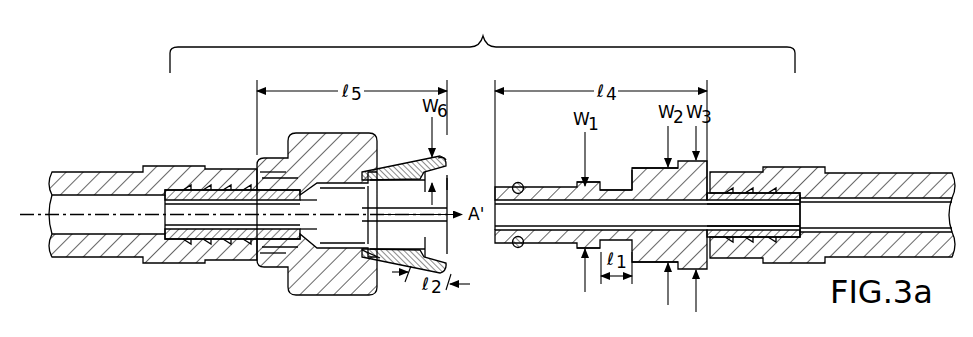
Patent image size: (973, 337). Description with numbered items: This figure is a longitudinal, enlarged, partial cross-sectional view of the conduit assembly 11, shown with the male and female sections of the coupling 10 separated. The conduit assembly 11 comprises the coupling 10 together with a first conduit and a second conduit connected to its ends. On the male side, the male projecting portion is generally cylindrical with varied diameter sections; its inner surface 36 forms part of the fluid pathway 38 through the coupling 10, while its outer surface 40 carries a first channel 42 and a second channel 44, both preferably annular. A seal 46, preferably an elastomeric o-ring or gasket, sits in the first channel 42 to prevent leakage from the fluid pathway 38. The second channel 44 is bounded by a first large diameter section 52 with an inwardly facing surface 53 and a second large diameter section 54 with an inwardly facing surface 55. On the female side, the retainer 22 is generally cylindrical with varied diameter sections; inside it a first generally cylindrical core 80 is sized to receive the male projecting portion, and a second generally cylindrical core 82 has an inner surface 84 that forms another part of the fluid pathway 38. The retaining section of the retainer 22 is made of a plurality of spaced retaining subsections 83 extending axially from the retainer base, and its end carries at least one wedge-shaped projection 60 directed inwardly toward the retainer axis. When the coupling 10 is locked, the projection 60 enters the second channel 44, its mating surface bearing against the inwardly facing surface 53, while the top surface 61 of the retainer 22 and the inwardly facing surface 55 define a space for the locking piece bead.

The coupling 10 is at (482, 43).
The conduit assembly 11 is at (855, 162).
The retainer 22 is at (384, 262).
The inner surface 36 is at (655, 200).
The fluid pathway 38 is at (252, 205).
The outer surface 40 is at (545, 186).
The first channel 42 is at (520, 247).
The second channel 44 is at (625, 186).
The seal 46 is at (518, 183).
The first large diameter section 52 is at (580, 250).
The inwardly facing surface 53 is at (590, 183).
The second large diameter section 54 is at (660, 266).
The inwardly facing surface 55 is at (627, 190).
The projection 60 is at (425, 162).
The top surface 61 is at (445, 160).
The first generally cylindrical core 80 is at (345, 190).
The second generally cylindrical core 82 is at (275, 200).
The retaining subsections 83 is at (447, 180).
The inner surface 84 is at (283, 232).